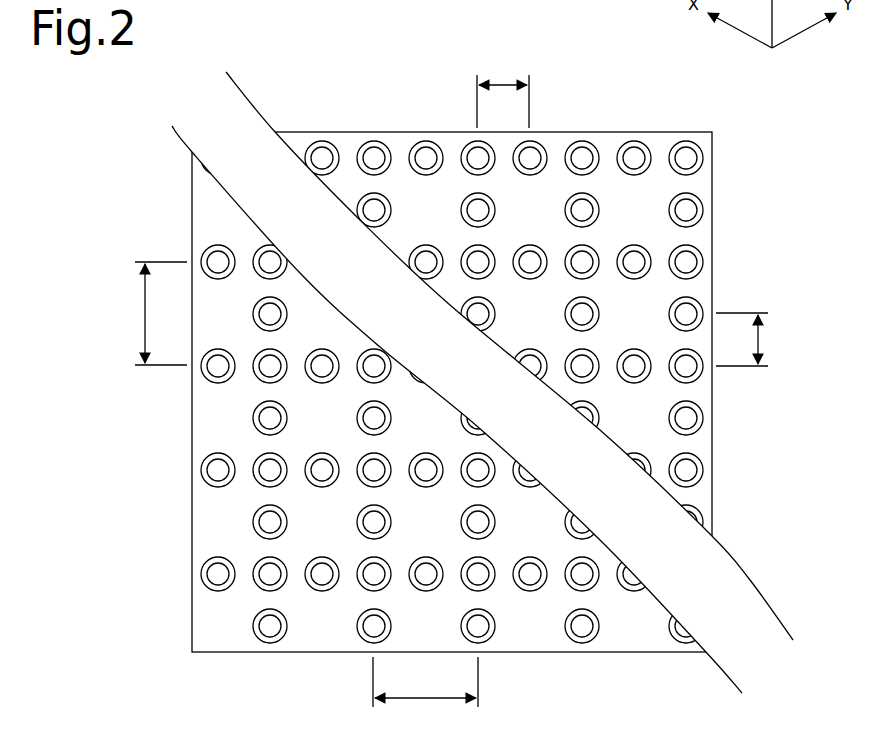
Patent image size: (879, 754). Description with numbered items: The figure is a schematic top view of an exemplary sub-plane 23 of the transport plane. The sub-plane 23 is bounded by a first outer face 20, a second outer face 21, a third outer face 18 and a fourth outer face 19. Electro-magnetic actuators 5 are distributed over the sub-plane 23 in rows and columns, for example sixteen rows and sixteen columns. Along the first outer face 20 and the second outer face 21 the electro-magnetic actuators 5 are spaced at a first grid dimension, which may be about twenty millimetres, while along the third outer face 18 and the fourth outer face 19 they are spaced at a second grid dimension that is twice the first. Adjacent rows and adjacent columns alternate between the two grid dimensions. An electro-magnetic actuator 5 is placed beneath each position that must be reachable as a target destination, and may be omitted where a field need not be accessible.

The electro-magnetic actuators 5 is at (478, 313).
The sub-plane 23 is at (306, 66).
The third outer face 18 is at (149, 313).
The fourth outer face 19 is at (425, 695).
The first outer face 20 is at (755, 339).
The second outer face 21 is at (503, 90).